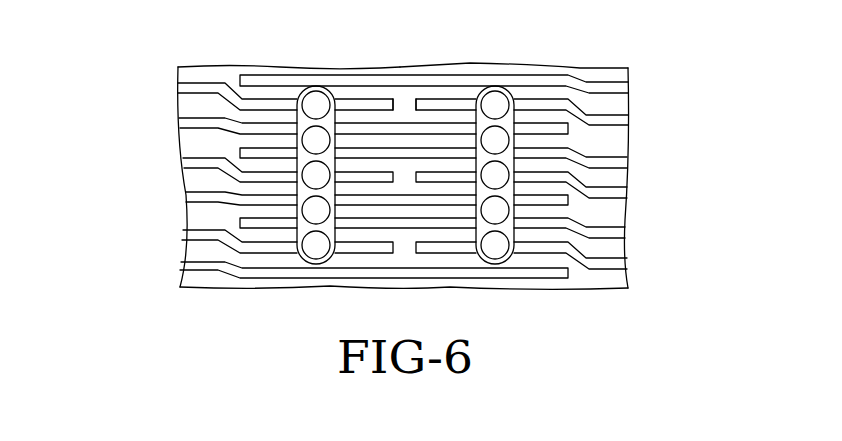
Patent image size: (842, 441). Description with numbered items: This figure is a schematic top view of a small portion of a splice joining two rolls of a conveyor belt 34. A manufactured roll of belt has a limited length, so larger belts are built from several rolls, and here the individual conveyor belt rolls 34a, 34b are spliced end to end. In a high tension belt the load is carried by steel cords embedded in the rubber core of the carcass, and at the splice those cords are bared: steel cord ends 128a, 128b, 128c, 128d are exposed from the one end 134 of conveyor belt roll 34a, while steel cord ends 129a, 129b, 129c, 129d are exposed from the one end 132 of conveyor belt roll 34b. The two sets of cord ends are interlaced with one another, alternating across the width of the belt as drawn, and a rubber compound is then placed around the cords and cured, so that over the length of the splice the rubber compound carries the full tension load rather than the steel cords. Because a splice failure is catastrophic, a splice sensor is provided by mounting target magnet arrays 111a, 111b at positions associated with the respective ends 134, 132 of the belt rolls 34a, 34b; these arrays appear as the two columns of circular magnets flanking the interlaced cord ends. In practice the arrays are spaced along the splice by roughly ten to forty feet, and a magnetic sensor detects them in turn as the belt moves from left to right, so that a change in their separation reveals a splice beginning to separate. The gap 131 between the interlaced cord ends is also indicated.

The conveyor belt 34 is at (248, 280).
The conveyor belt roll 34a is at (530, 70).
The conveyor belt roll 34b is at (204, 82).
The target magnet array 111a is at (507, 230).
The target magnet array 111b is at (302, 232).
The steel cord end 128a is at (618, 87).
The steel cord end 128b is at (618, 123).
The steel cord end 128c is at (618, 161).
The steel cord end 128d is at (618, 192).
The steel cord end 129a is at (188, 85).
The steel cord end 129b is at (188, 122).
The steel cord end 129c is at (188, 160).
The steel cord end 129d is at (188, 195).
The gap between pad segments 131 is at (410, 98).
The end of conveyor belt roll 132 is at (380, 98).
The end of conveyor belt roll 134 is at (436, 98).